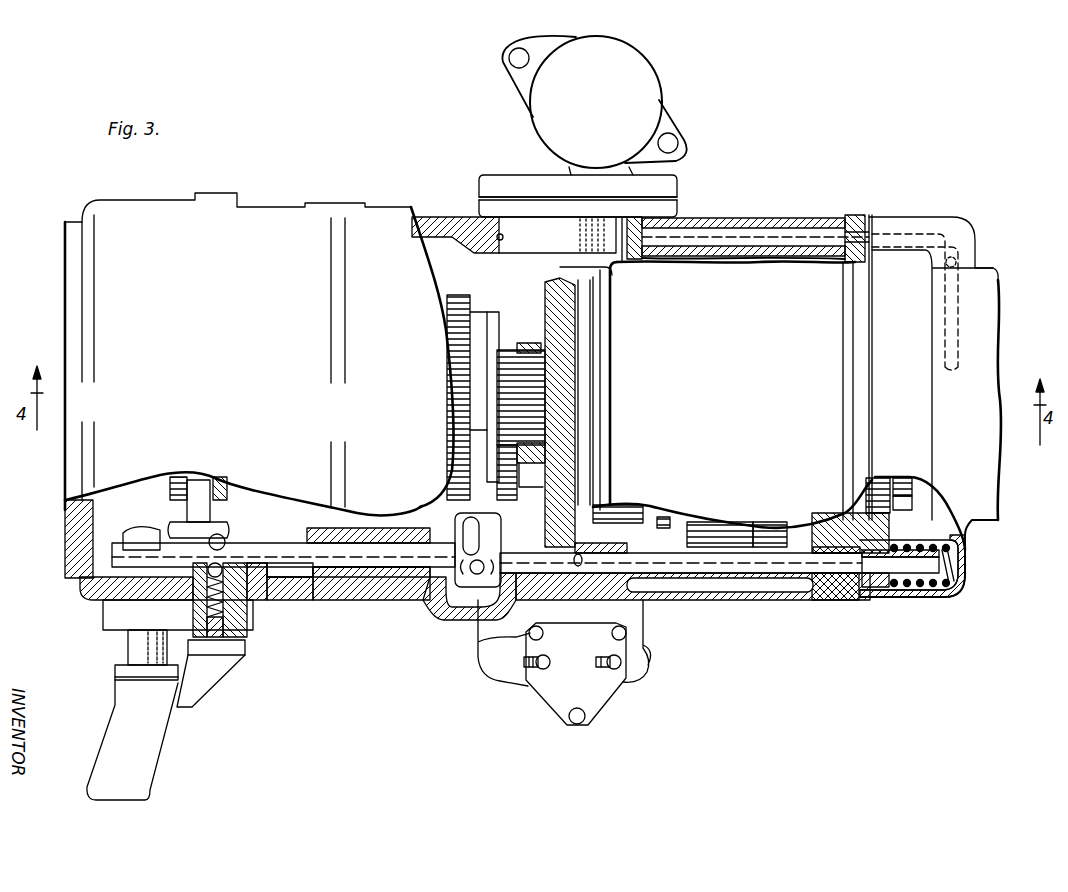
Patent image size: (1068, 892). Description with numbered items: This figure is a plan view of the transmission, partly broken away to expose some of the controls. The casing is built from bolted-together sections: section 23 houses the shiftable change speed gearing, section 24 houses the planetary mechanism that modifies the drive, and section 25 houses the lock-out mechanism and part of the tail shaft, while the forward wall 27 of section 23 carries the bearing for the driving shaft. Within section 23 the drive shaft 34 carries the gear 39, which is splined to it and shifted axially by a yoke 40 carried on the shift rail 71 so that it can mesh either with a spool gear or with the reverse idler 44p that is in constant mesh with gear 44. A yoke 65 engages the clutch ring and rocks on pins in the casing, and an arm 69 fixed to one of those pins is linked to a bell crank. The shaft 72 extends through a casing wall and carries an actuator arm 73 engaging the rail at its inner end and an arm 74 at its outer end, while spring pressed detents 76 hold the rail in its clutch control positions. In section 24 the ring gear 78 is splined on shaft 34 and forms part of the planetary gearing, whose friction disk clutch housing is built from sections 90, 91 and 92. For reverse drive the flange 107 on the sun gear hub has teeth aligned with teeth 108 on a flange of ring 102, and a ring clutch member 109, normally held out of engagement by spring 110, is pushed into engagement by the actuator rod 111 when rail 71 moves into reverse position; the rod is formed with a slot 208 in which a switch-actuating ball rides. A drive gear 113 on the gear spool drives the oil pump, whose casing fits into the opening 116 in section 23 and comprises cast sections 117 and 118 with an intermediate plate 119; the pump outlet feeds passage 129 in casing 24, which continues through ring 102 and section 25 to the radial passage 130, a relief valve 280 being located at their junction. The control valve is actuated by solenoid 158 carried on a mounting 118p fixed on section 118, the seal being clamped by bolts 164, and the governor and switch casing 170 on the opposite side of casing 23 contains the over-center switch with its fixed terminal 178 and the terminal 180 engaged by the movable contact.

The casing section 23 is at (422, 215).
The casing section 24 is at (716, 600).
The casing section 25 is at (918, 600).
The forward wall 27 is at (70, 528).
The drive shaft 34 is at (500, 330).
The gear 39 is at (460, 296).
The yoke 40 is at (478, 500).
The gear 44 is at (510, 350).
The reverse idler 44p is at (510, 478).
The yoke 65 is at (207, 503).
The arm 69 is at (228, 660).
The shift rail 71 is at (370, 580).
The shaft 72 is at (135, 648).
The actuator arm 73 is at (135, 537).
The arm 74 is at (117, 715).
The spring pressed detents 76 is at (240, 597).
The ring gear 78 is at (645, 508).
The clutch housing section 90 is at (688, 520).
The clutch housing section 91 is at (728, 524).
The clutch housing section 92 is at (773, 524).
The ring 102 is at (852, 600).
The flange 107 is at (900, 499).
The teeth 108 is at (882, 478).
The ring clutch member 109 is at (877, 600).
The spring 110 is at (945, 596).
The actuator rod 111 is at (760, 575).
The drive gear 113 is at (585, 462).
The opening 116 is at (496, 238).
The pump casing section 117 is at (480, 207).
The pump casing section 118 is at (508, 182).
The mounting 118p is at (670, 115).
The intermediate plate 119 is at (480, 197).
The passage 129 is at (742, 236).
The radially extending passage 130 is at (995, 333).
The solenoid 158 is at (640, 84).
The bolts 164 is at (515, 64).
The governor and switch casing 170 is at (642, 636).
The terminal 178 is at (614, 670).
The terminal 180 is at (548, 660).
The slot 208 is at (580, 556).
The relief valve 280 is at (940, 272).